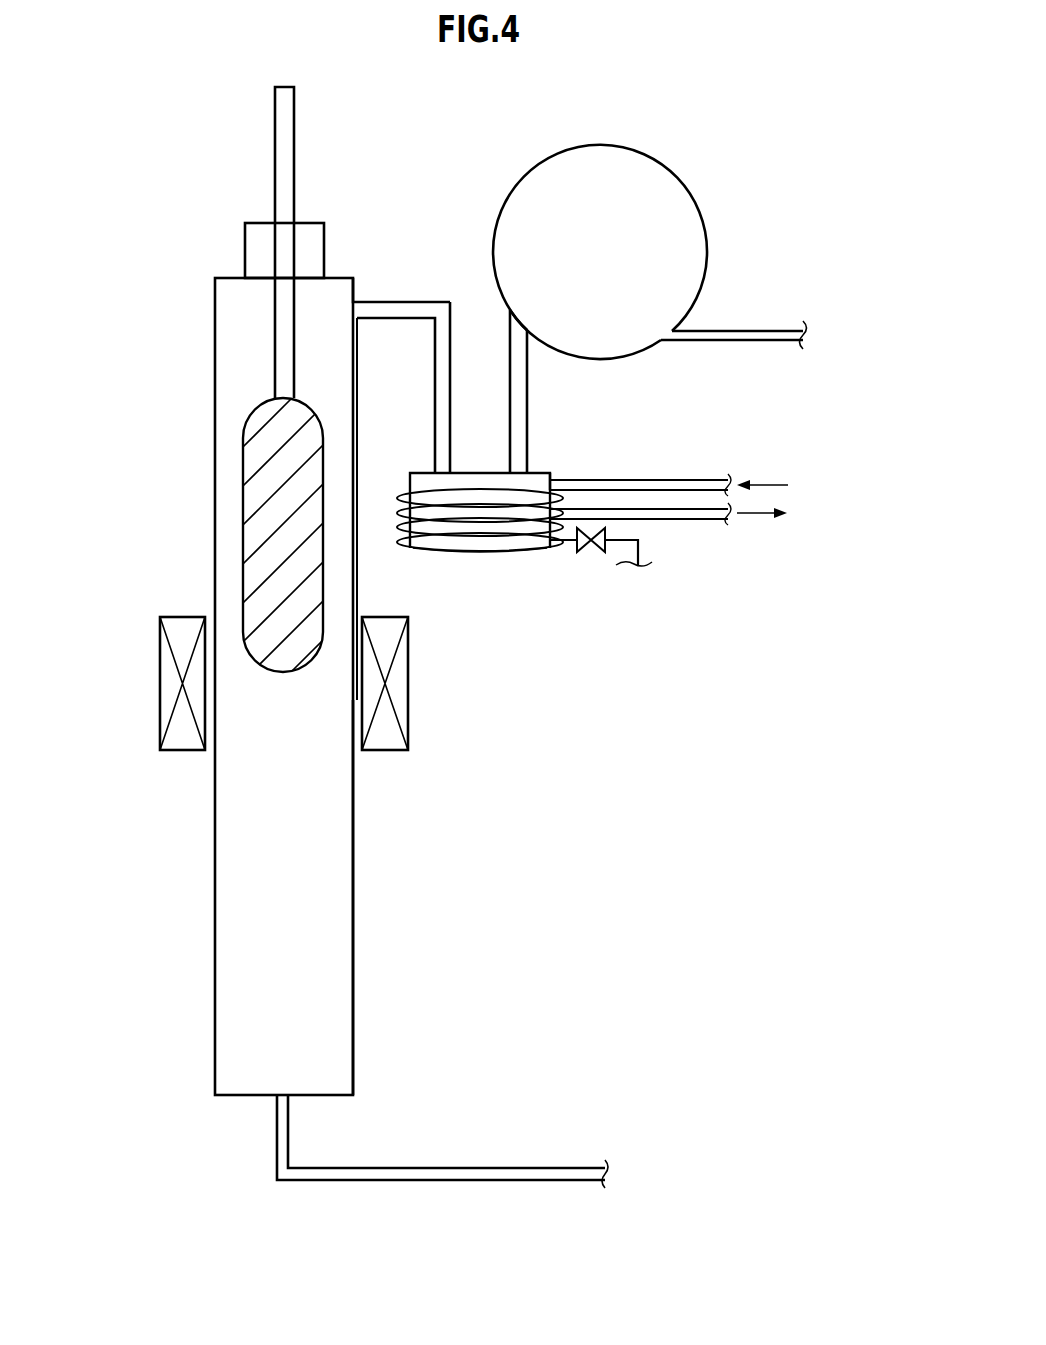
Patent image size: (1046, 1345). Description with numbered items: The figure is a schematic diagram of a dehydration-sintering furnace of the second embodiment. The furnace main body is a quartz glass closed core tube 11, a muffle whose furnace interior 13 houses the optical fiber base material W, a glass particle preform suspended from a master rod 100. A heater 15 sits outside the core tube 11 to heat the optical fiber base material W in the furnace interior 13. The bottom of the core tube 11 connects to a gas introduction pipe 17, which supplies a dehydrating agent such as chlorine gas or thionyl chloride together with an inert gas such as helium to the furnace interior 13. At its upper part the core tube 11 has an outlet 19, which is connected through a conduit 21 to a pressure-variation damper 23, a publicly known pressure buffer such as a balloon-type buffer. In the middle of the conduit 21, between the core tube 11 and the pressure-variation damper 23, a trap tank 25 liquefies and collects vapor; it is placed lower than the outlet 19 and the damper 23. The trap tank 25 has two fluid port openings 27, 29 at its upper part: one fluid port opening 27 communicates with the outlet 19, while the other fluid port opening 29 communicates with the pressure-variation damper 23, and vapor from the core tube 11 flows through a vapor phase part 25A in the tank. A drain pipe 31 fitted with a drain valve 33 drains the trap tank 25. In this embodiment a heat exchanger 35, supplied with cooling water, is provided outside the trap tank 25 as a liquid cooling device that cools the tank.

The core tube 11 is at (360, 878).
The furnace interior 13 is at (347, 975).
The heater 15 is at (404, 688).
The gas introduction pipe 17 is at (503, 1172).
The outlet 19 is at (352, 307).
The conduit 21 is at (440, 418).
The pressure-variation damper 23 is at (688, 170).
The trap tank 25 is at (478, 462).
The vapor phase part 25A is at (540, 482).
The fluid port opening 27 is at (440, 472).
The fluid port opening 29 is at (520, 470).
The drain pipe 31 is at (657, 549).
The drain valve 33 is at (590, 550).
The heat exchanger 35 is at (485, 560).
The master rod 100 is at (286, 163).
The optical fiber base material W is at (268, 515).